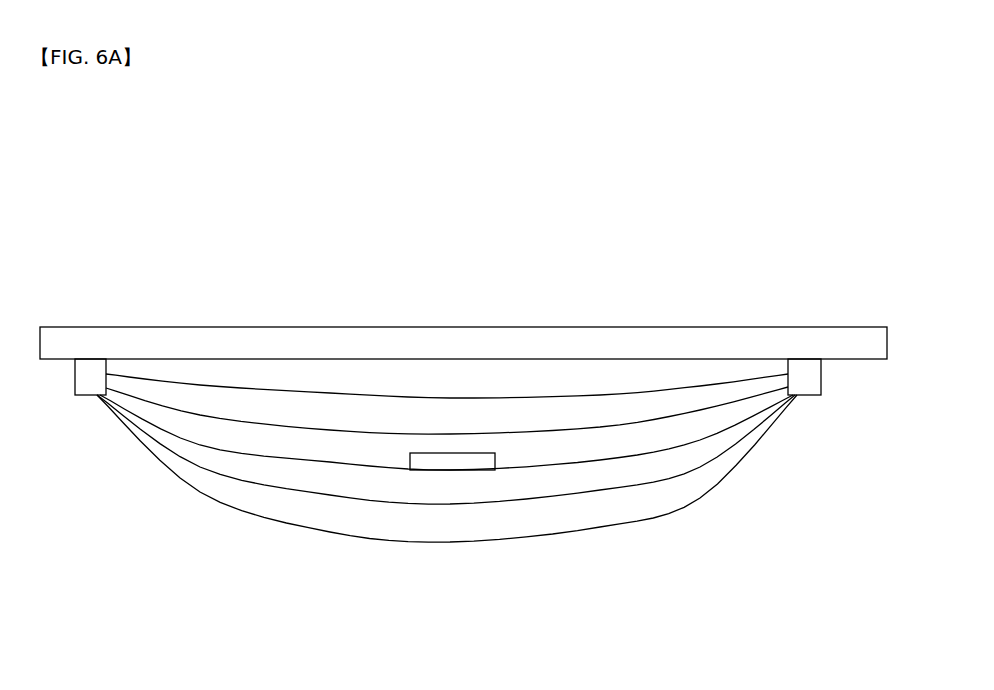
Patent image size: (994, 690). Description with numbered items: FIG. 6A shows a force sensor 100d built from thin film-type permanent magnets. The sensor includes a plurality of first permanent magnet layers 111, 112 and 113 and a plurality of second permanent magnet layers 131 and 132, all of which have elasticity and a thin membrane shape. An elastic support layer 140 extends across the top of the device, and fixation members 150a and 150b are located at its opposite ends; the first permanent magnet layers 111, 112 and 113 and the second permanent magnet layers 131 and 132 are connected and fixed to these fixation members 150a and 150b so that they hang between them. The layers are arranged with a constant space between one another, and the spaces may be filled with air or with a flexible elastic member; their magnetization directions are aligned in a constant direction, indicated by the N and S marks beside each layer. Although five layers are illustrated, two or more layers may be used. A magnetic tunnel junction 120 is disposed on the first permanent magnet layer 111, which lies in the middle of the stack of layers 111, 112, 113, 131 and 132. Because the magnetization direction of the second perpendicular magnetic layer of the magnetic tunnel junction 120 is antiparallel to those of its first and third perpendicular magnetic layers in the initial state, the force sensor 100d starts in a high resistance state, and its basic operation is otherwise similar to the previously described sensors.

The force sensor 100d is at (511, 186).
The support layer 140 is at (870, 353).
The fixation member 150a is at (84, 395).
The fixation member 150b is at (808, 395).
The second permanent magnet layer 132 is at (403, 397).
The second permanent magnet layer 131 is at (463, 433).
The first permanent magnet layer 111 is at (612, 460).
The first permanent magnet layer 112 is at (500, 505).
The first permanent magnet layer 113 is at (448, 543).
The magnetic tunnel junction 120 is at (495, 460).